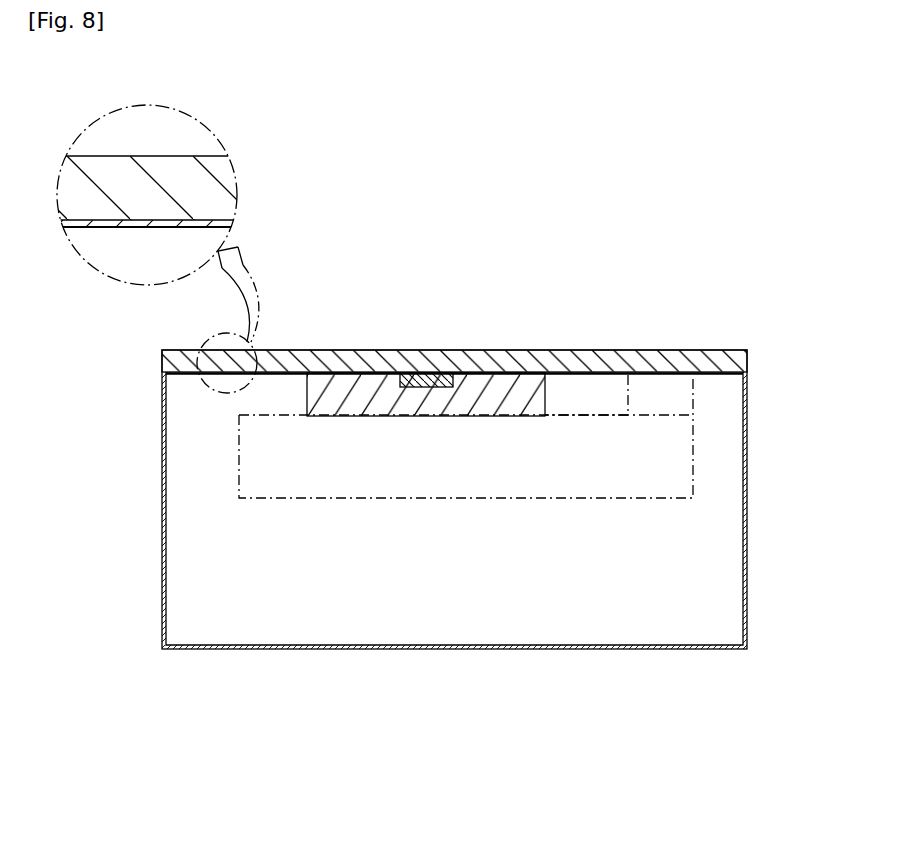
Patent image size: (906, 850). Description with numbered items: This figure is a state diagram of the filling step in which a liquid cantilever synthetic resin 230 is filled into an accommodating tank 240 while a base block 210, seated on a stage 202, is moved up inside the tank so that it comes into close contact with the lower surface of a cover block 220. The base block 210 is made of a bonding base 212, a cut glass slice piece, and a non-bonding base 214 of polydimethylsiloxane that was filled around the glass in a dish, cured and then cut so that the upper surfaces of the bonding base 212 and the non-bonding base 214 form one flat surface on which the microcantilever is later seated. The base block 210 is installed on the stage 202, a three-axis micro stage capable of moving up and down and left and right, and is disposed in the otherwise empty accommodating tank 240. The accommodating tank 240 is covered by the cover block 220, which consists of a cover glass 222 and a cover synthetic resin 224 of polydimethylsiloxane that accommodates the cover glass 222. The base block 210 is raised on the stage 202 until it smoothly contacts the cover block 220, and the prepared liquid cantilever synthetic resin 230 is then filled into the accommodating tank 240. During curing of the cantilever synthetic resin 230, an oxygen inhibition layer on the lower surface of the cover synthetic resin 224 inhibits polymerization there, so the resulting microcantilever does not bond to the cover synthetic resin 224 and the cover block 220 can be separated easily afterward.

The stage 202 is at (457, 498).
The base block 210 is at (467, 295).
The bonding base 212 is at (430, 383).
The non-bonding base 214 is at (510, 388).
The cover block 220 is at (398, 249).
The cover glass 222 is at (203, 181).
The cover synthetic resin 224 is at (213, 223).
The cantilever synthetic resin 230 is at (325, 625).
The accommodating tank 240 is at (553, 648).